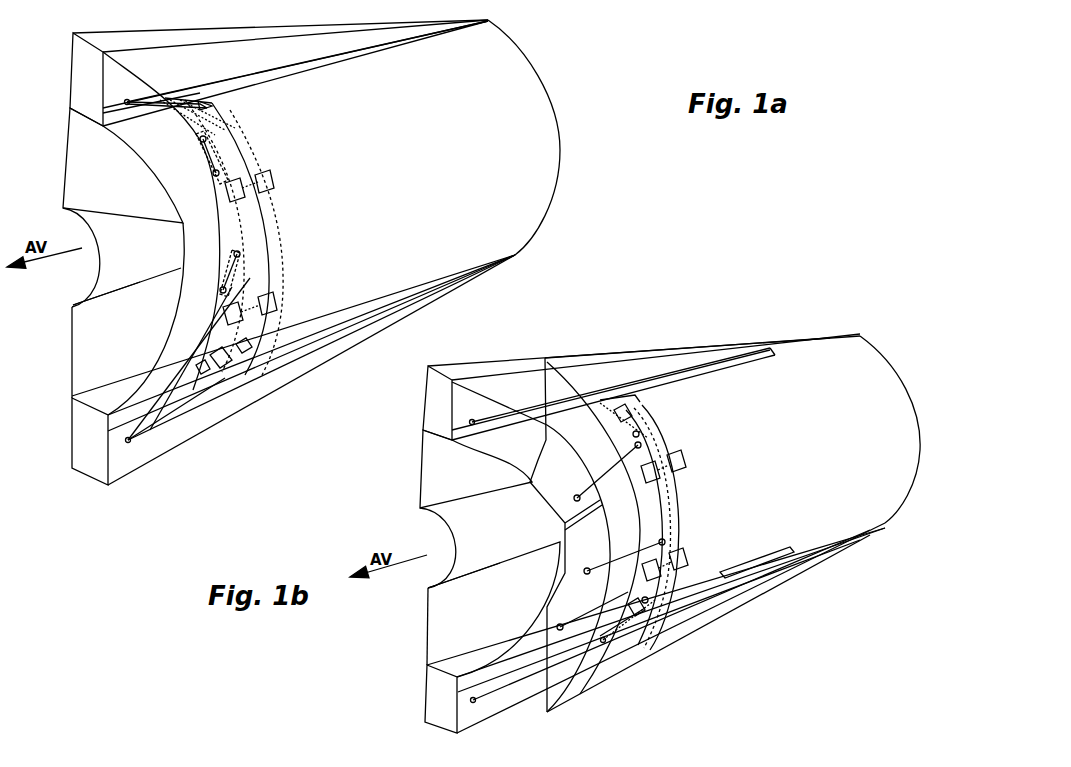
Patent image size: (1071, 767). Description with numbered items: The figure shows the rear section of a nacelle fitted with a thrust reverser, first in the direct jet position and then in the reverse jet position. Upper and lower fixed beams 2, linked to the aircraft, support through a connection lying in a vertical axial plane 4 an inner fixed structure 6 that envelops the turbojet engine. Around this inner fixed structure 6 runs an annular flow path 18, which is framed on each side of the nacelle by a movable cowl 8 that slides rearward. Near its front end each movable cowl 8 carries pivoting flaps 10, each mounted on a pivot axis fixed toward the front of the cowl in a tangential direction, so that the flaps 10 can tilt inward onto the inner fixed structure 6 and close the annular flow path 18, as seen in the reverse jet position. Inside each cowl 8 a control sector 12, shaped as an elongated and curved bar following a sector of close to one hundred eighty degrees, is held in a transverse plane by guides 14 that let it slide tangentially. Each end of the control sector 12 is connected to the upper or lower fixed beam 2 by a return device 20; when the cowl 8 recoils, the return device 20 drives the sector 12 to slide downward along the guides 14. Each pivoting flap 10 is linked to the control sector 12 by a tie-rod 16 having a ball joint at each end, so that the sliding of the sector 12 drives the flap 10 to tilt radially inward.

In FIG. 1A, the fixed beam 2 is at (84, 78).
In FIG. 1B, the fixed beam 2 is at (428, 383).
In FIG. 1A, the vertical axial plane 4 is at (78, 155).
In FIG. 1B, the vertical axial plane 4 is at (420, 463).
In FIG. 1A, the inner fixed structure 6 is at (88, 248).
In FIG. 1B, the inner fixed structure 6 is at (450, 520).
In FIG. 1A, the movable cowl 8 is at (527, 50).
In FIG. 1B, the movable cowl 8 is at (870, 362).
In FIG. 1A, the pivoting flap 10 is at (280, 265).
In FIG. 1B, the pivoting flap 10 is at (558, 497).
In FIG. 1A, the control sector 12 is at (268, 200).
In FIG. 1B, the control sector 12 is at (682, 498).
In FIG. 1A, the guides 14 is at (266, 178).
In FIG. 1B, the guides 14 is at (688, 470).
In FIG. 1A, the tie-rod 16 is at (243, 270).
In FIG. 1B, the tie-rod 16 is at (616, 550).
In FIG. 1A, the annular flow path 18 is at (90, 330).
In FIG. 1B, the annular flow path 18 is at (460, 598).
In FIG. 1A, the return device 20 is at (168, 76).
In FIG. 1B, the return device 20 is at (634, 406).